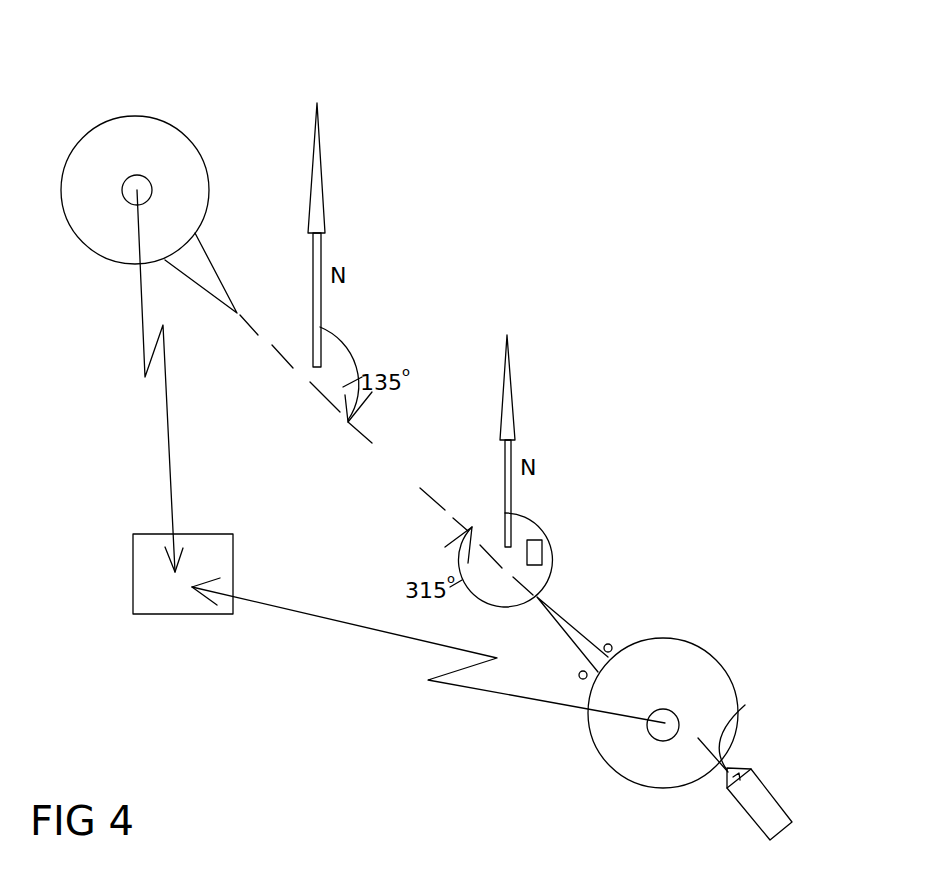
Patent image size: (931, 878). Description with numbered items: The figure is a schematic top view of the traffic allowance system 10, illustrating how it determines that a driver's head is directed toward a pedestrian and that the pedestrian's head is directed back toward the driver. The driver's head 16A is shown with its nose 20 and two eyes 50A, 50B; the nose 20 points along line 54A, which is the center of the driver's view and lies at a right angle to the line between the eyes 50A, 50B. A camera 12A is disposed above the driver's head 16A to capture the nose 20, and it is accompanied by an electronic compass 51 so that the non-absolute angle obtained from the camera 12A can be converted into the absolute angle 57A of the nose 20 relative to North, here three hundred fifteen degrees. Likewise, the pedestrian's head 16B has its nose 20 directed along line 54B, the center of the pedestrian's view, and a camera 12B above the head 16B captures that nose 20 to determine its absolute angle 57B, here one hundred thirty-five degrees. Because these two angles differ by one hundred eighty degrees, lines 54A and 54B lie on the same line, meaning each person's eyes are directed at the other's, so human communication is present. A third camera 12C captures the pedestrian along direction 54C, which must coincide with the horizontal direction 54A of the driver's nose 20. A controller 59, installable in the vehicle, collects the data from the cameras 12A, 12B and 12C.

The traffic allowance system 10 is at (460, 75).
The camera 12A is at (665, 735).
The camera 12B is at (137, 188).
The camera 12C is at (760, 810).
The driver's head 16A is at (628, 753).
The pedestrian's head 16B is at (98, 167).
The nose 20 is at (202, 265).
The driver's eye 50A is at (579, 675).
The driver's eye 50B is at (610, 644).
The electronic compass 51 is at (542, 553).
The center of driver's view 54A is at (432, 505).
The center of pedestrian's view 54B is at (282, 367).
The direction of pedestrian in relation to driver 54C is at (707, 750).
The absolute angle of driver's nose 57A is at (472, 602).
The absolute angle of pedestrian's nose 57B is at (335, 363).
The controller 59 is at (158, 589).